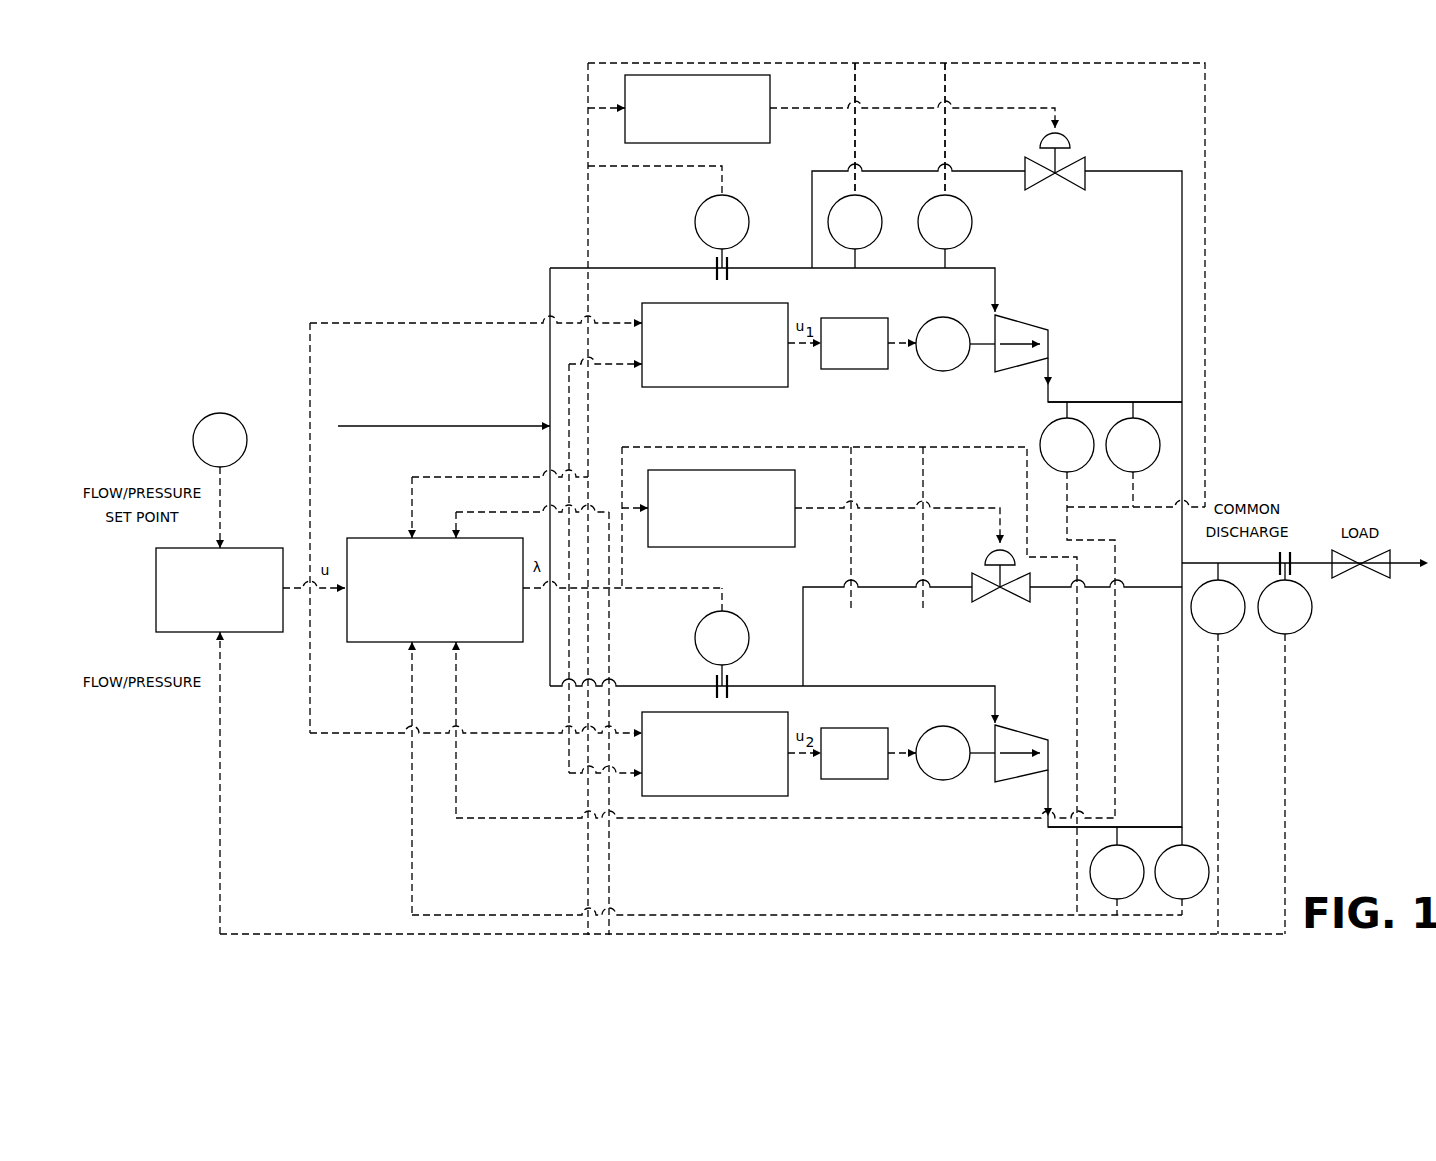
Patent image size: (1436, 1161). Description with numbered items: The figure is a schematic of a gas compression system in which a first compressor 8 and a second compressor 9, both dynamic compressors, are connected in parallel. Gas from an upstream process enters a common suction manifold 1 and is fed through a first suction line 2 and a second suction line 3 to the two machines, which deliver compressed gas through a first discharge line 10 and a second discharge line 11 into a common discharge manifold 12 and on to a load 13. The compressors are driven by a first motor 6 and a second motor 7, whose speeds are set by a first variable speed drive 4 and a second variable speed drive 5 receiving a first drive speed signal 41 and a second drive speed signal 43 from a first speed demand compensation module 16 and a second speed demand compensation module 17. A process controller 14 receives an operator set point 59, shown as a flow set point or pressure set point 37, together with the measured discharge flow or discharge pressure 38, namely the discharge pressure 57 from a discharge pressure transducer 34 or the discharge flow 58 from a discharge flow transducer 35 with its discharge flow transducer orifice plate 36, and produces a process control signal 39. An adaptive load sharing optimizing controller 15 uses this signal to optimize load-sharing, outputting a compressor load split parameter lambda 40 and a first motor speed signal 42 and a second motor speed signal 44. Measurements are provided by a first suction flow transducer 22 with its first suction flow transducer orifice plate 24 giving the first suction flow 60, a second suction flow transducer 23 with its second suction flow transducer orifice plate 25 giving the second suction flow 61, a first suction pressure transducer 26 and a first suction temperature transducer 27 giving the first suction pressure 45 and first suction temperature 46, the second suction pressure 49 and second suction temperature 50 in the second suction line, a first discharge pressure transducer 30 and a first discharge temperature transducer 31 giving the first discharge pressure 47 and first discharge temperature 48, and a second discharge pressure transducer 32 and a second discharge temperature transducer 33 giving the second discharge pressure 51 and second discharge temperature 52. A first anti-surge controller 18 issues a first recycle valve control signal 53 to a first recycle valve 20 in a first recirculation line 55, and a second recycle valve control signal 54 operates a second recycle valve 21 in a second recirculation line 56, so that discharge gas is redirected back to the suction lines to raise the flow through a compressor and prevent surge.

The common suction manifold 1 is at (375, 428).
The first suction line 2 is at (768, 270).
The second suction line 3 is at (775, 688).
The first variable speed drive 4 is at (850, 370).
The second variable speed drive 5 is at (852, 779).
The first motor 6 is at (950, 370).
The second motor 7 is at (952, 779).
The first compressor 8 is at (1050, 318).
The second compressor 9 is at (1010, 782).
The first discharge line 10 is at (1048, 402).
The second discharge line 11 is at (1058, 830).
The common discharge manifold 12 is at (1232, 563).
The load 13 is at (1372, 577).
The process controller 14 is at (156, 580).
The adaptive load sharing optimizing controller 15 is at (380, 642).
The first speed demand compensation module 16 is at (680, 470).
The second speed demand compensation module 17 is at (665, 797).
The first anti-surge controller 18 is at (623, 93).
The first recycle valve 20 is at (1078, 190).
The second recycle valve 21 is at (1030, 598).
The first suction flow transducer 22 is at (742, 205).
The second suction flow transducer 23 is at (740, 620).
The first suction flow transducer orifice plate 24 is at (716, 262).
The second suction flow transducer orifice plate 25 is at (728, 680).
The first suction pressure transducer 26 is at (865, 248).
The first suction temperature transducer 27 is at (968, 238).
The first discharge pressure transducer 30 is at (1085, 460).
The first discharge temperature transducer 31 is at (1150, 460).
The second discharge pressure transducer 32 is at (1125, 899).
The second discharge temperature transducer 33 is at (1205, 880).
The discharge pressure transducer 34 is at (1235, 625).
The discharge flow transducer 35 is at (1302, 625).
The discharge flow transducer orifice plate 36 is at (1292, 567).
The flow set point/pressure set point 37 is at (222, 512).
The discharge flow/discharge pressure 38 is at (222, 658).
The process control signal 39 is at (300, 590).
The compressor load split parameter λ 40 is at (540, 597).
The first drive speed signal 41 is at (790, 350).
The first motor speed signal 42 is at (892, 345).
The second drive speed signal 43 is at (805, 755).
The second motor speed signal 44 is at (900, 757).
The first suction pressure 45 is at (858, 178).
The first suction temperature 46 is at (948, 178).
The first discharge pressure 47 is at (1067, 490).
The first discharge temperature 48 is at (1133, 490).
The second suction pressure 49 is at (851, 515).
The second suction temperature 50 is at (923, 515).
The second discharge pressure 51 is at (1117, 899).
The second discharge temperature 52 is at (1182, 899).
The first recycle valve control signal 53 is at (780, 110).
The second recycle valve control signal 54 is at (805, 510).
The first recirculation line 55 is at (1105, 170).
The second recirculation line 56 is at (1133, 590).
The discharge pressure 57 is at (1218, 690).
The discharge flow 58 is at (1285, 690).
The operator set point 59 is at (198, 425).
The first suction flow 60 is at (588, 185).
The second suction flow 61 is at (640, 592).